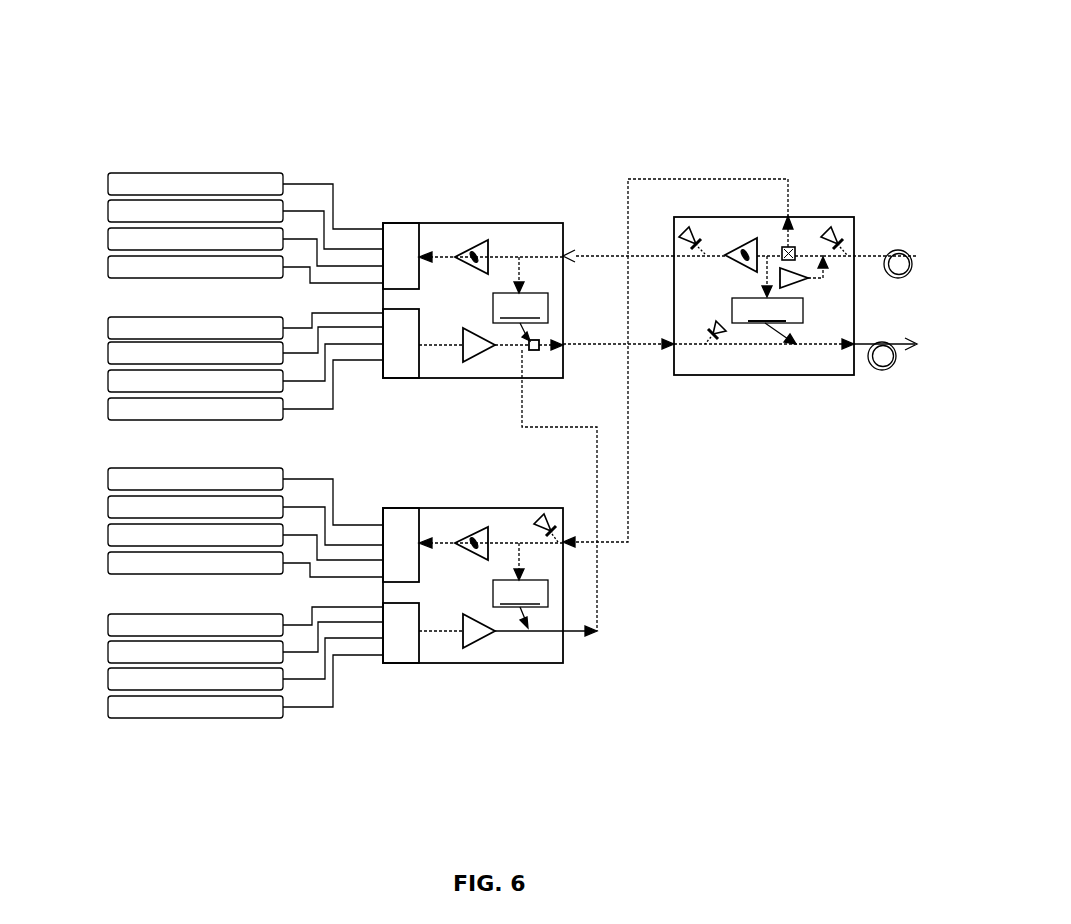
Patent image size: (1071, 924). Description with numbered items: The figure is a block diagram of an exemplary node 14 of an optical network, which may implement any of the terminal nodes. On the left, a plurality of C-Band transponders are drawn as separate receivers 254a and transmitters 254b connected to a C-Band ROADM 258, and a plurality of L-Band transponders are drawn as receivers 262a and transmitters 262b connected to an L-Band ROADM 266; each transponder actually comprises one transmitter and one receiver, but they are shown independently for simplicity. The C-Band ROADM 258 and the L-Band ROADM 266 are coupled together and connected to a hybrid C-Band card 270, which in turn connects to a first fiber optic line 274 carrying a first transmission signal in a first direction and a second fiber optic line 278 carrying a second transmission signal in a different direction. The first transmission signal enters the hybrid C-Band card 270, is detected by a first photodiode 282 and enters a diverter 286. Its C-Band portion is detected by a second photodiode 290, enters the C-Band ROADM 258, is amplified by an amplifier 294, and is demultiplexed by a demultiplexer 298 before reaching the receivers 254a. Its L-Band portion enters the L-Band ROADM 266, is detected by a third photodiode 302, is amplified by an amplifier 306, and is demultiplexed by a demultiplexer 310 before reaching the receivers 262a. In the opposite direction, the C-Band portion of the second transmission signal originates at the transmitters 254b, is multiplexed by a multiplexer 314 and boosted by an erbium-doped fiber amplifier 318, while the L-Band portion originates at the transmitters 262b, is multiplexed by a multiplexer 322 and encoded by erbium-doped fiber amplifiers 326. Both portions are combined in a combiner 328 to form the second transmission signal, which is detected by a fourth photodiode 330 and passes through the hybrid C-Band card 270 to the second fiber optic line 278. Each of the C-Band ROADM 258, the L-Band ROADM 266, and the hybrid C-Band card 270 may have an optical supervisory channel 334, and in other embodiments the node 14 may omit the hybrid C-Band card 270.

The node 14 is at (834, 39).
The receivers 254a is at (105, 278).
The transmitters 254b is at (105, 317).
The C-Band ROADM 258 is at (545, 223).
The receivers 262a is at (105, 468).
The transmitters 262b is at (105, 614).
The L-Band ROADM 266 is at (546, 663).
The hybrid C-Band card 270 is at (815, 217).
The first fiber optic line 274 is at (900, 252).
The second fiber optic line 278 is at (893, 372).
The first photodiode 282 is at (833, 221).
The diverter 286 is at (777, 238).
The second photodiode 290 is at (676, 236).
The amplifier 294 is at (486, 240).
The demultiplexer 298 is at (396, 223).
The third photodiode 302 is at (540, 521).
The amplifier 306 is at (475, 530).
The demultiplexer 310 is at (398, 508).
The multiplexer 314 is at (398, 378).
The erbium-doped fiber amplifier 318 is at (478, 360).
The multiplexer 322 is at (400, 663).
The erbium-doped fiber amplifiers 326 is at (481, 648).
The combiner 328 is at (531, 352).
The fourth photodiode 330 is at (716, 322).
The optical supervisory channel 334 is at (648, 450).